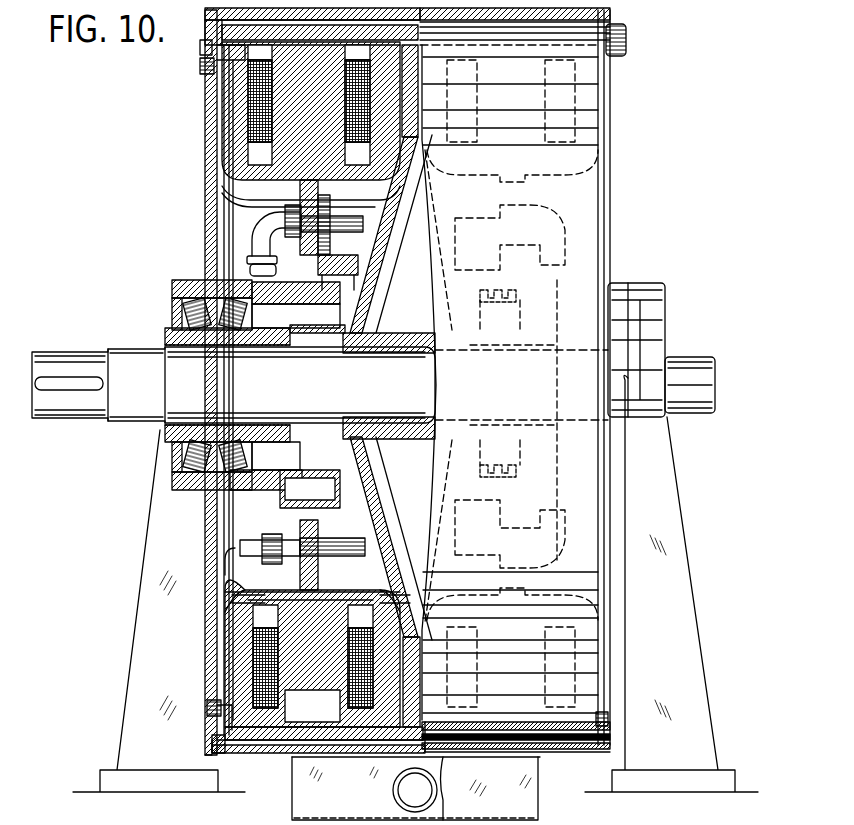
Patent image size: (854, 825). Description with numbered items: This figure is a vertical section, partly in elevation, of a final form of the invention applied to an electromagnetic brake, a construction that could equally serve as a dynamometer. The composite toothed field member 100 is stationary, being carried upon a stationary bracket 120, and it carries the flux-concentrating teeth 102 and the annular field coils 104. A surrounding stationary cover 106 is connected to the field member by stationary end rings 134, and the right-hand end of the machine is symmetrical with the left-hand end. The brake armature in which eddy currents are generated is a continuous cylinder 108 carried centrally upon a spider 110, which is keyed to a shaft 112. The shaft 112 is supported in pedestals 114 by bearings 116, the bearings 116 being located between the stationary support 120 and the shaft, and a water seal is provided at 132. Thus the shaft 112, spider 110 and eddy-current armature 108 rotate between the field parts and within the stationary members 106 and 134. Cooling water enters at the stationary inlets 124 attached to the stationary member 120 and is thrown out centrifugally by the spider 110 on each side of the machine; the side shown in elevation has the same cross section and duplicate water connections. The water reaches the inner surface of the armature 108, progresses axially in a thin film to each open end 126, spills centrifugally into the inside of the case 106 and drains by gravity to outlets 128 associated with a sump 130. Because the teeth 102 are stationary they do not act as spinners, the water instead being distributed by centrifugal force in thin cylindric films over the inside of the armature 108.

The composite toothed field member 100 is at (282, 128).
The flux-concentrating teeth 102 is at (214, 44).
The annular field coils 104 is at (250, 90).
The stationary cover 106 is at (267, 760).
The eddy-current armature 108 is at (428, 22).
The spider 110 is at (387, 335).
The shaft 112 is at (348, 391).
The pedestals 114 is at (158, 533).
The bearings 116 is at (192, 320).
The stationary bracket 120 is at (252, 308).
The stationary inlets 124 is at (265, 228).
The open ends 126 is at (210, 60).
The outlets 128 is at (315, 753).
The sump 130 is at (312, 807).
The water seal 132 is at (352, 280).
The stationary end rings 134 is at (212, 68).